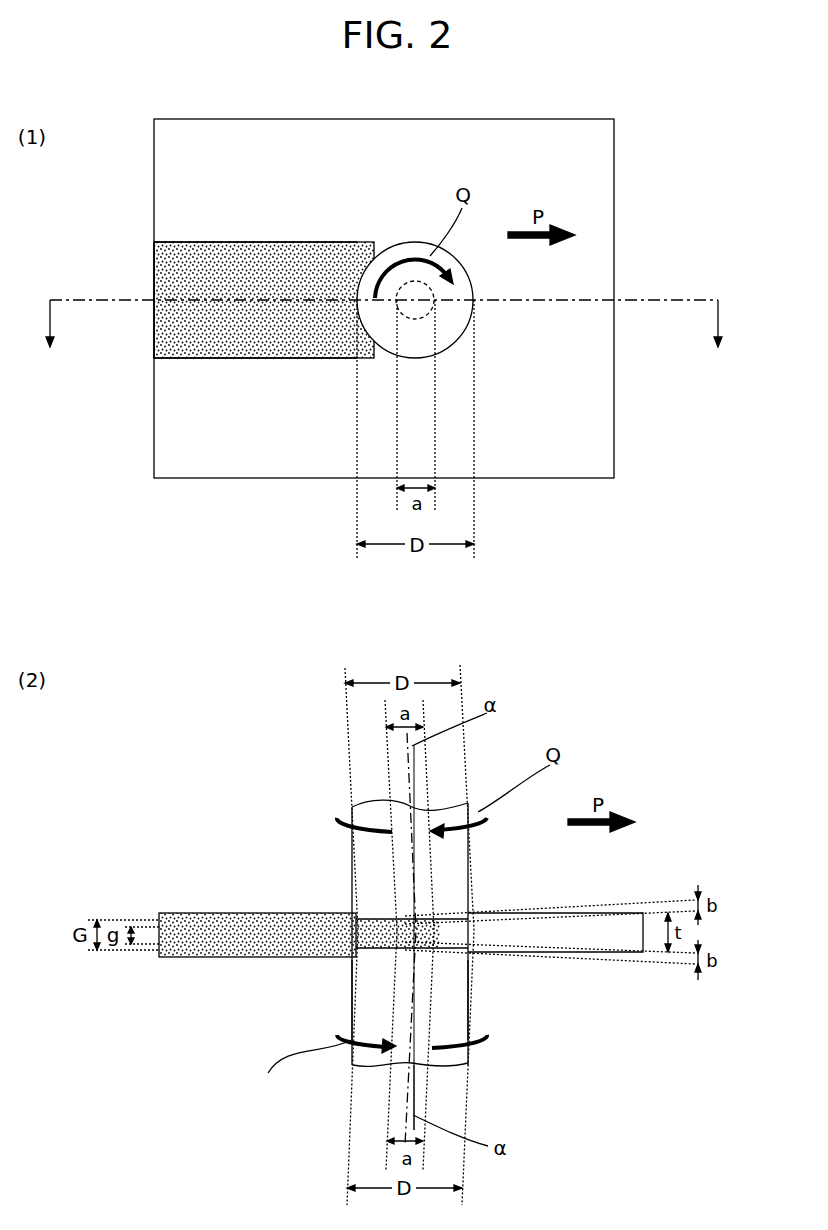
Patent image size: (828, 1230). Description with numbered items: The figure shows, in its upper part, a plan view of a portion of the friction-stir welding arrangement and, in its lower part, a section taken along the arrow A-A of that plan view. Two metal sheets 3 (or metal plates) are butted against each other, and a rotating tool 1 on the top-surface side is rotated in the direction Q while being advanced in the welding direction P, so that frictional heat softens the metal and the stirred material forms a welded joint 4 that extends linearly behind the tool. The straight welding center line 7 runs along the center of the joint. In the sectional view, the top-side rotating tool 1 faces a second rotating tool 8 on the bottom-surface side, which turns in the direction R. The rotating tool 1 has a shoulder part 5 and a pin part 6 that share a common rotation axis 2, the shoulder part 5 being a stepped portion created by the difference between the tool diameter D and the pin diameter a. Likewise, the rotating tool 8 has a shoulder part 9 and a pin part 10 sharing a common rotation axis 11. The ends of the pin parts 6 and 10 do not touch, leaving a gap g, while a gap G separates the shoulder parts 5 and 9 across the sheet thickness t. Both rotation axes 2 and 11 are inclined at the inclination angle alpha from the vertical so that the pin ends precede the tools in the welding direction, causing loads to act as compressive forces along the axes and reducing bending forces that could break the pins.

The rotating tool 1 is at (474, 272).
The rotation axis 2 is at (406, 762).
The metal sheet 3 is at (600, 157).
The welded joint 4 is at (217, 252).
The shoulder part 5 is at (440, 340).
The pin part 6 is at (425, 308).
The welding center line 7 is at (100, 300).
The rotating tool 8 is at (460, 1003).
The shoulder part 9 is at (462, 982).
The pin part 10 is at (398, 962).
The rotation axis 11 is at (407, 1103).